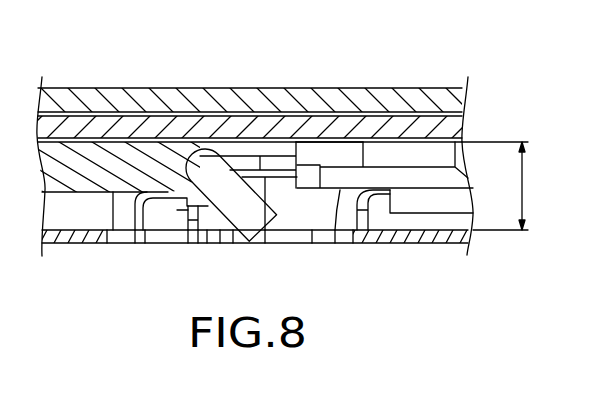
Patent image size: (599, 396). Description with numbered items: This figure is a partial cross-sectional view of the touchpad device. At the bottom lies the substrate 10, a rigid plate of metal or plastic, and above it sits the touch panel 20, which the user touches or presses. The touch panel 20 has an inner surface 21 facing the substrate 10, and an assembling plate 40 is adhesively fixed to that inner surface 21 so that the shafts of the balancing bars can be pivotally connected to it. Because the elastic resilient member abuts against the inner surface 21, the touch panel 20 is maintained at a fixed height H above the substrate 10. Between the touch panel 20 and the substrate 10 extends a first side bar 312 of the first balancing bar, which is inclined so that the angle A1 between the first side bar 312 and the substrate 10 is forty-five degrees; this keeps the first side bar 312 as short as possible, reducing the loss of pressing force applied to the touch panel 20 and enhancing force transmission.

The touch panel 20 is at (109, 126).
The assembling plate 40 is at (153, 163).
The first side bar 312 is at (244, 203).
The substrate 10 is at (66, 234).
The angle A1 is at (188, 211).
The inner surface 21 is at (412, 143).
The fixed height H is at (507, 186).